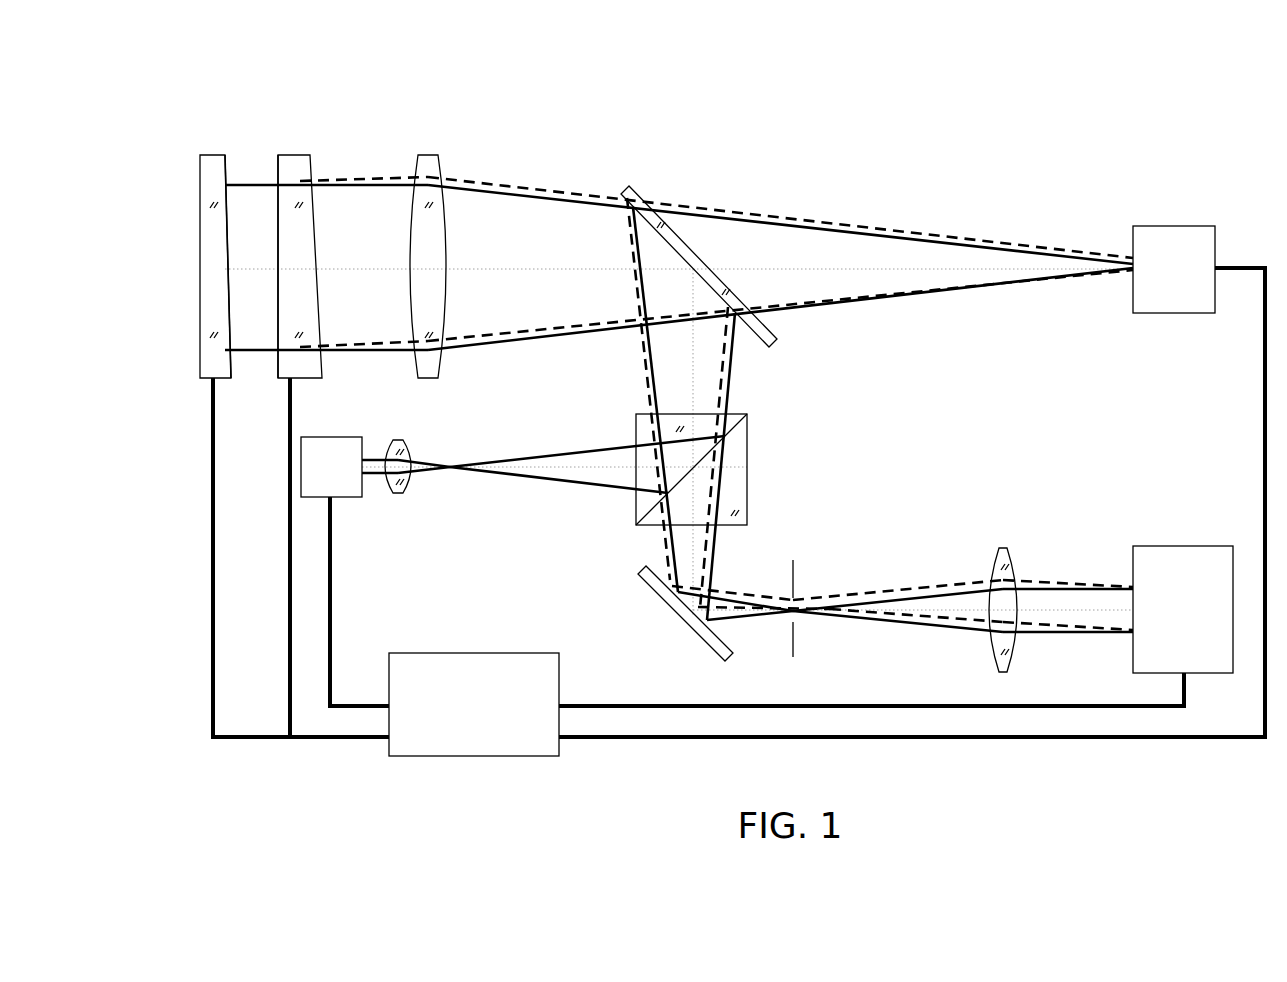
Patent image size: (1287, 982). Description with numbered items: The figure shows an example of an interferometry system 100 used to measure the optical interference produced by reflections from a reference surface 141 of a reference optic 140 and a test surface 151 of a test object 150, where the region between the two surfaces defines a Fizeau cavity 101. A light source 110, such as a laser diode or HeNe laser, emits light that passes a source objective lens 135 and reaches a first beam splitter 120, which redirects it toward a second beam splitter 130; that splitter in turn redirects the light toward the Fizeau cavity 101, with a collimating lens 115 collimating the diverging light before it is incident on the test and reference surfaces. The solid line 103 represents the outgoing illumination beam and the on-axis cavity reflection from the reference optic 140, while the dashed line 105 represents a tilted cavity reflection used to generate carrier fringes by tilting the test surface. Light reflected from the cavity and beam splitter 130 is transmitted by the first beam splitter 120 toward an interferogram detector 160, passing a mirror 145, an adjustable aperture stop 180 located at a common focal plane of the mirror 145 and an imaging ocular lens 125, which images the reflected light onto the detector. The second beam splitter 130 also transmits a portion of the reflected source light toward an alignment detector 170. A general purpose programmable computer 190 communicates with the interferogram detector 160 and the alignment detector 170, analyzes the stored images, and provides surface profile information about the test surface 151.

The interferometry system 100 is at (754, 120).
The Fizeau cavity 101 is at (249, 160).
The solid line 103 is at (540, 188).
The dashed line 105 is at (815, 222).
The light source 110 is at (513, 466).
The collimating lens 115 is at (428, 165).
The first beam splitter 120 is at (735, 440).
The imaging ocular lens 125 is at (1004, 548).
The second beam splitter 130 is at (776, 340).
The source objective lens 135 is at (398, 495).
The reference optic 140 is at (298, 165).
The reference surface 141 is at (280, 365).
The mirror 145 is at (655, 582).
The test object 150 is at (213, 165).
The test surface 151 is at (232, 372).
The interferogram detector 160 is at (1183, 546).
The alignment detector 170 is at (1177, 226).
The adjustable aperture stop 180 is at (797, 565).
The general purpose programmable computer 190 is at (739, 512).